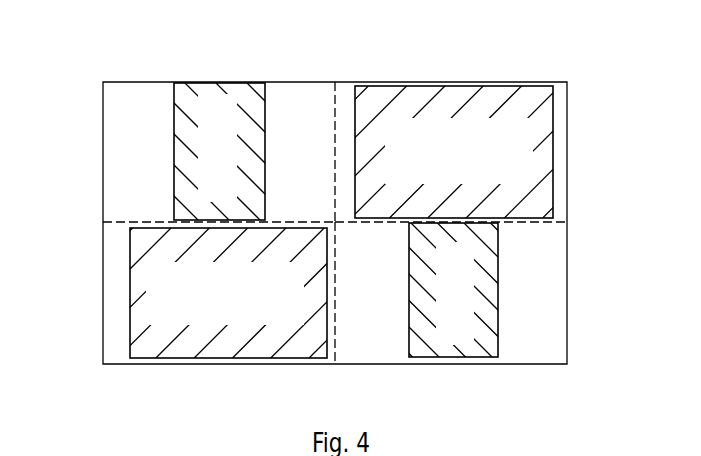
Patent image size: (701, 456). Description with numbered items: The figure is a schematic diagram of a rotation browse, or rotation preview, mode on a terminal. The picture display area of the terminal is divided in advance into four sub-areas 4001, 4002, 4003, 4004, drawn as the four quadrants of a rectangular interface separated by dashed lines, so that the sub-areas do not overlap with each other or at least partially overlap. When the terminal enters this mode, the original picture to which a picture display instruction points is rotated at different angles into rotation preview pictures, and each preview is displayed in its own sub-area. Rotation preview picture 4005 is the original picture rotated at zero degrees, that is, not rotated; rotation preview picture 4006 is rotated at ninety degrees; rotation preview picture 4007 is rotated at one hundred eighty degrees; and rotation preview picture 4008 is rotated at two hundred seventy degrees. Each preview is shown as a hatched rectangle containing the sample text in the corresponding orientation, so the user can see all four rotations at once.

The sub-area 4001 is at (110, 98).
The sub-area 4002 is at (558, 98).
The sub-area 4003 is at (558, 243).
The sub-area 4004 is at (112, 243).
The rotation preview picture 4005 is at (218, 92).
The rotation preview picture 4006 is at (453, 90).
The rotation preview picture 4007 is at (458, 350).
The rotation preview picture 4008 is at (228, 352).